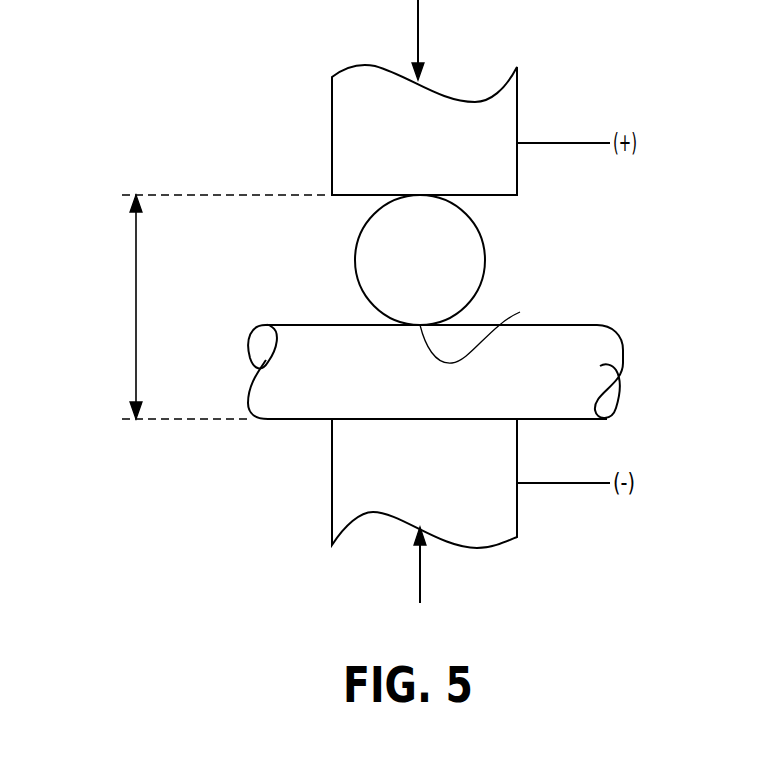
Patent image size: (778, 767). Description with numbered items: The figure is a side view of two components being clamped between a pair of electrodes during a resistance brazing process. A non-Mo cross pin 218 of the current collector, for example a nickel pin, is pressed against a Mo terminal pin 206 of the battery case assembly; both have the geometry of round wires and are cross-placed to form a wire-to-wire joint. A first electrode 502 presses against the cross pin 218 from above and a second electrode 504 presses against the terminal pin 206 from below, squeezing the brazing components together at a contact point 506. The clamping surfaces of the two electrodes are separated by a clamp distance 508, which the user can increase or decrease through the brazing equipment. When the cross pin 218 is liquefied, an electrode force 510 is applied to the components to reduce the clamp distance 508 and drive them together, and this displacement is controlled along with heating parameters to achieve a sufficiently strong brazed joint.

The first electrode 502 is at (332, 135).
The second electrode 504 is at (332, 460).
The contact point 506 is at (520, 312).
The clamp distance 508 is at (136, 300).
The electrode force 510 is at (418, 35).
The cross pin 218 is at (467, 267).
The terminal pin 206 is at (582, 367).